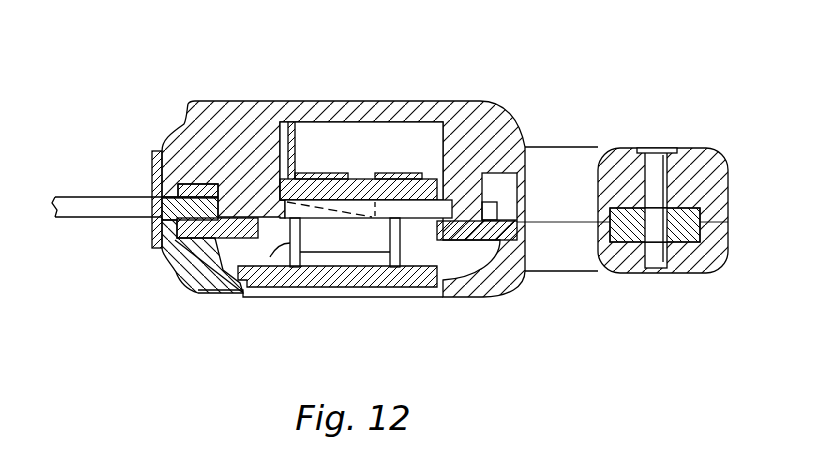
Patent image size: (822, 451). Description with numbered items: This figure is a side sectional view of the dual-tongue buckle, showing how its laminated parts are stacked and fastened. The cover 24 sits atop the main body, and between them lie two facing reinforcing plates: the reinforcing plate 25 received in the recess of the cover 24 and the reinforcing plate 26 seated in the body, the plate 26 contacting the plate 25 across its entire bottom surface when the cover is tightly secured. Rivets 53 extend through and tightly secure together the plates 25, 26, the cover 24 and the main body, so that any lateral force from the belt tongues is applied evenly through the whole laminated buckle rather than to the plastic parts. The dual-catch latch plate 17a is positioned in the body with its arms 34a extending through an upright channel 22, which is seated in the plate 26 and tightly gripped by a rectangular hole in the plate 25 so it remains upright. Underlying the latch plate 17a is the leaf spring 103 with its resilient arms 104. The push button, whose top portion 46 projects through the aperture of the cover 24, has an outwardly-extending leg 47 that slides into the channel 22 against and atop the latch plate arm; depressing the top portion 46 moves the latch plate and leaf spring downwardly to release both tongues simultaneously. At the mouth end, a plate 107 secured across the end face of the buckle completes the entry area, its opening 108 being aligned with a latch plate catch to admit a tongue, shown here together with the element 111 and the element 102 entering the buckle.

The dual-catch latch plate 17a is at (492, 105).
The reinforcing plate 26 is at (197, 192).
The plate 107 is at (152, 176).
The lead wire 111 is at (93, 210).
The opening 108 is at (167, 222).
The channel 22 is at (270, 257).
The arms 34a is at (323, 241).
The leg 47 is at (362, 258).
The top portion 46 is at (398, 282).
The cover 24 is at (467, 294).
The reinforcing plate 25 is at (480, 240).
The conductor path (hidden) 102 is at (333, 203).
The resilient arms 104 is at (377, 137).
The leaf spring 103 is at (412, 176).
The rivets 53 is at (660, 175).